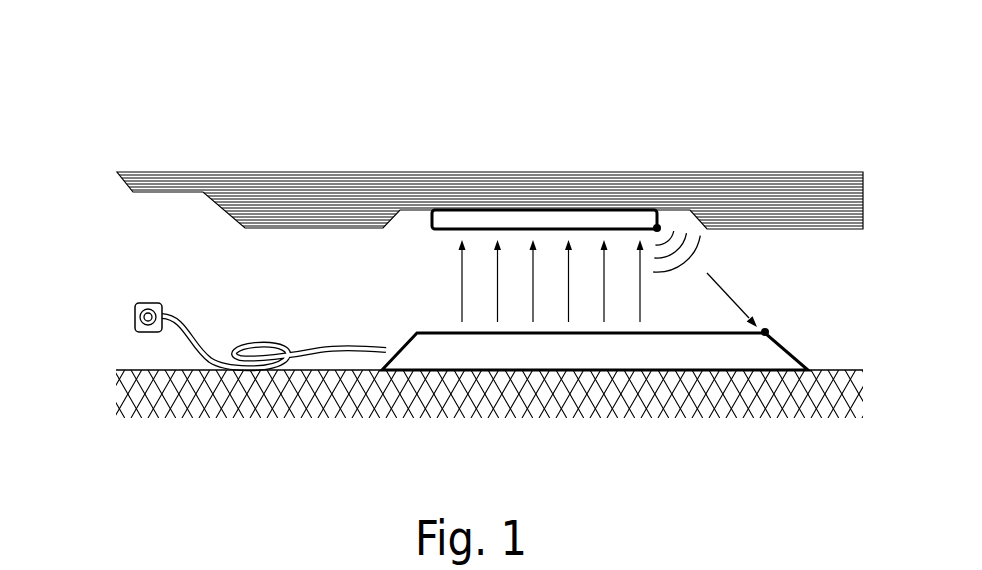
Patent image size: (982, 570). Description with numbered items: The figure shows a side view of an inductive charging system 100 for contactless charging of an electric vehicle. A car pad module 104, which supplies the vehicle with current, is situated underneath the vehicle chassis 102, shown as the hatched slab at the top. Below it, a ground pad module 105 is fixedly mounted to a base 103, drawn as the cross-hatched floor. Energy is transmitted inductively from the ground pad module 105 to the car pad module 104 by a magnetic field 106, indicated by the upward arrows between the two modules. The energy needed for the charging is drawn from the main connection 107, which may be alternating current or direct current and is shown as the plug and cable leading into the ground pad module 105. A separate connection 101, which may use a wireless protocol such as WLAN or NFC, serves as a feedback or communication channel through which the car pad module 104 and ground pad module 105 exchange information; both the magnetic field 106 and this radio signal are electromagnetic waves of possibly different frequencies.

The inductive charging system 100 is at (214, 103).
The separate connection 101 is at (750, 286).
The vehicle chassis 102 is at (783, 172).
The base 103 is at (842, 368).
The car pad module 104 is at (533, 198).
The ground pad module 105 is at (513, 370).
The magnetic field 106 is at (384, 290).
The main connection 107 is at (120, 276).